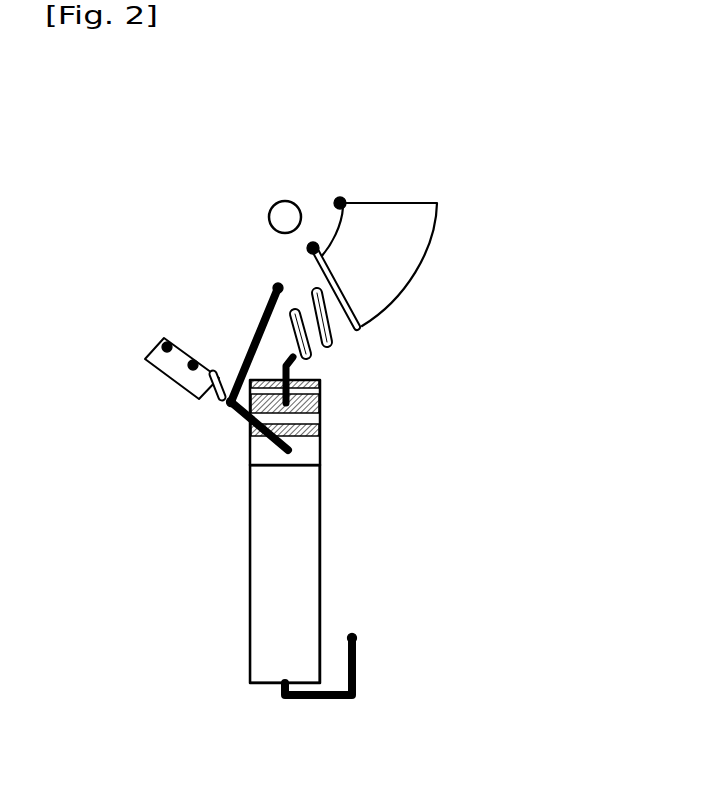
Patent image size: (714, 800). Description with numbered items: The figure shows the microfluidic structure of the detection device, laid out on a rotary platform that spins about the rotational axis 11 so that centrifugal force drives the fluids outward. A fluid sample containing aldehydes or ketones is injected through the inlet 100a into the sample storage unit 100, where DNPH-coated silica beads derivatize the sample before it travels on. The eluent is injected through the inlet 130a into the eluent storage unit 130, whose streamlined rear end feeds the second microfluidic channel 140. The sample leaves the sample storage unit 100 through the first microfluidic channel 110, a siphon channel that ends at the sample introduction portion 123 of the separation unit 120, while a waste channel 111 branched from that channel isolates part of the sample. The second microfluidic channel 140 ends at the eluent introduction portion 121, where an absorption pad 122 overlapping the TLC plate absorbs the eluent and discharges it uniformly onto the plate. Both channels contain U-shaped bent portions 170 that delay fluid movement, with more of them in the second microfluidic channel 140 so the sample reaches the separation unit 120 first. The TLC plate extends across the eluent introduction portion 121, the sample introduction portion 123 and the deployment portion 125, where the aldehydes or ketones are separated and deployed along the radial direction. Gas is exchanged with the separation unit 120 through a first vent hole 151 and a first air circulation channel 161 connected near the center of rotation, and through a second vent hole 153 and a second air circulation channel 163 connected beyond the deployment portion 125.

The rotational axis 11 is at (284, 201).
The inlet 130a is at (340, 198).
The eluent storage unit 130 is at (422, 258).
The second microfluidic channel 140 is at (358, 327).
The bent portions 170 is at (313, 289).
The first vent hole 151 is at (277, 287).
The first air circulation channel 161 is at (250, 370).
The sample storage unit 100 is at (178, 390).
The inlet 100a is at (163, 336).
The first microfluidic channel 110 is at (202, 392).
The waste channel 111 is at (227, 410).
The separation unit 120 is at (503, 375).
The absorption pad 122 is at (320, 382).
The eluent introduction portion 121 is at (321, 403).
The sample introduction portion 123 is at (321, 443).
The deployment portion 125 is at (321, 523).
The second vent hole 153 is at (353, 634).
The second air circulation channel 163 is at (358, 655).